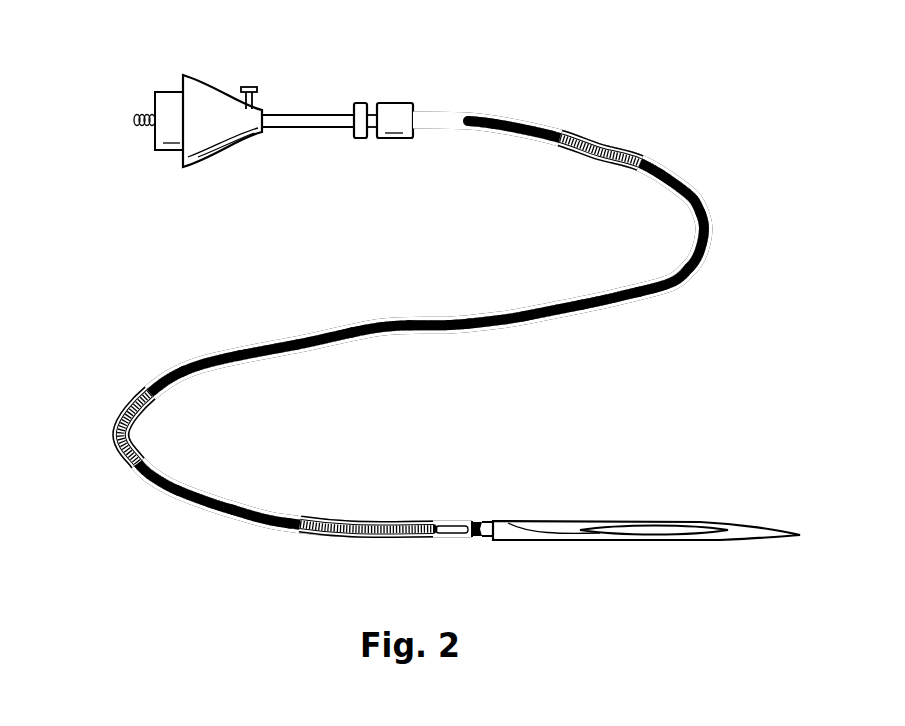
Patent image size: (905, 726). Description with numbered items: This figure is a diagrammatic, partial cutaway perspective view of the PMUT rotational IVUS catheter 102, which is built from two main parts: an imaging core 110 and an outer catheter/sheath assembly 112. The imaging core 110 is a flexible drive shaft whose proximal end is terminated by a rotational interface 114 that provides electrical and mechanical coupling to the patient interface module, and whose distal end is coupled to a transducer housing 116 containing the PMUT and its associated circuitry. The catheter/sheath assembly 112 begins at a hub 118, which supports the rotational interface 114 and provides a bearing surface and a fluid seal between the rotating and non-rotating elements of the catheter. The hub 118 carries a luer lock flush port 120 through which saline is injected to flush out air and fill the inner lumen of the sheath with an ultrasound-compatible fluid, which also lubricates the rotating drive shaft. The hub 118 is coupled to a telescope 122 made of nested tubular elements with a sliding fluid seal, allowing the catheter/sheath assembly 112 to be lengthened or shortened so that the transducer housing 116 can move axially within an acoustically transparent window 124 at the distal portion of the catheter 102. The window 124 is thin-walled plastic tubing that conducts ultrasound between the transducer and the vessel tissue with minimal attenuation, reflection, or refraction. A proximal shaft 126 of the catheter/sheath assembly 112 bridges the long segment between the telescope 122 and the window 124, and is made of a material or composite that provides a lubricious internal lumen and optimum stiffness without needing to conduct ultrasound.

The PMUT rotational IVUS catheter 102 is at (546, 78).
The imaging core 110 is at (393, 318).
The catheter/sheath assembly 112 is at (112, 428).
The rotational interface 114 is at (132, 119).
The transducer housing 116 is at (451, 538).
The hub 118 is at (200, 81).
The luer lock flush port 120 is at (248, 85).
The telescope 122 is at (408, 95).
The acoustically transparent window 124 is at (368, 538).
The proximal shaft 126 is at (579, 128).